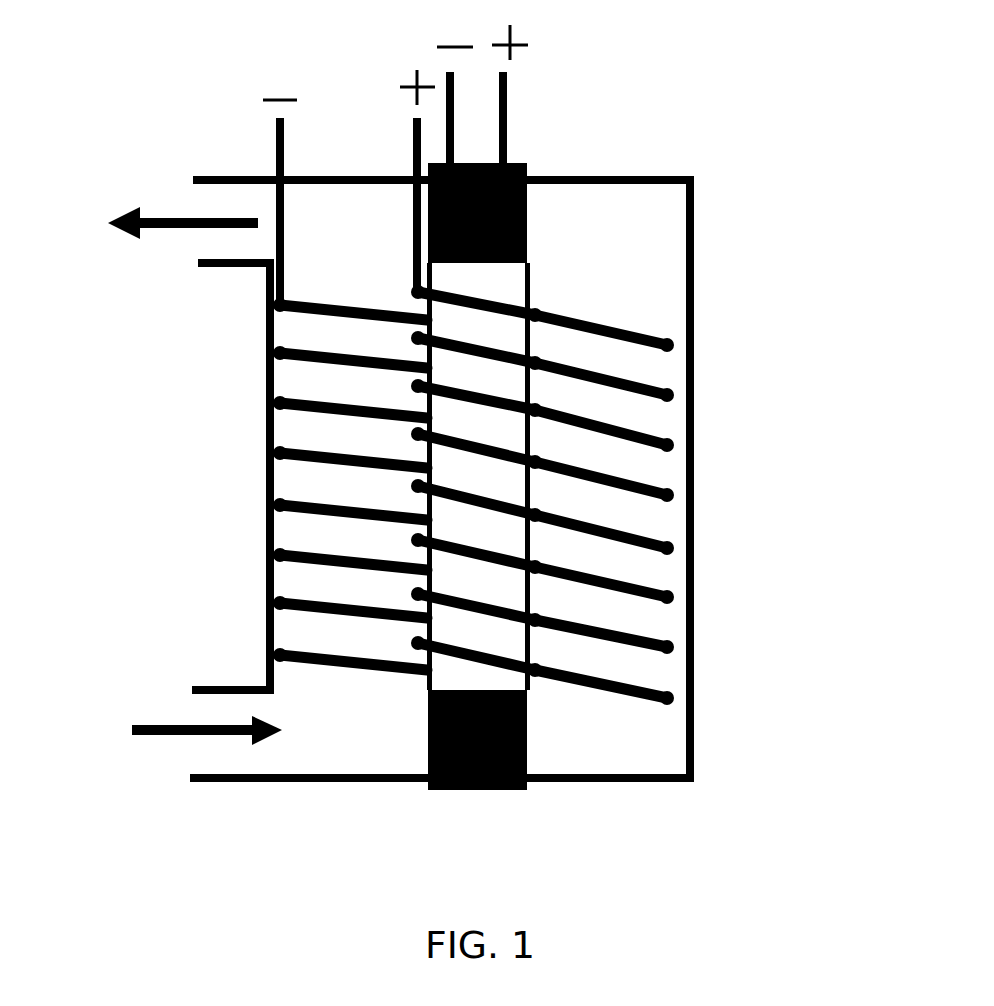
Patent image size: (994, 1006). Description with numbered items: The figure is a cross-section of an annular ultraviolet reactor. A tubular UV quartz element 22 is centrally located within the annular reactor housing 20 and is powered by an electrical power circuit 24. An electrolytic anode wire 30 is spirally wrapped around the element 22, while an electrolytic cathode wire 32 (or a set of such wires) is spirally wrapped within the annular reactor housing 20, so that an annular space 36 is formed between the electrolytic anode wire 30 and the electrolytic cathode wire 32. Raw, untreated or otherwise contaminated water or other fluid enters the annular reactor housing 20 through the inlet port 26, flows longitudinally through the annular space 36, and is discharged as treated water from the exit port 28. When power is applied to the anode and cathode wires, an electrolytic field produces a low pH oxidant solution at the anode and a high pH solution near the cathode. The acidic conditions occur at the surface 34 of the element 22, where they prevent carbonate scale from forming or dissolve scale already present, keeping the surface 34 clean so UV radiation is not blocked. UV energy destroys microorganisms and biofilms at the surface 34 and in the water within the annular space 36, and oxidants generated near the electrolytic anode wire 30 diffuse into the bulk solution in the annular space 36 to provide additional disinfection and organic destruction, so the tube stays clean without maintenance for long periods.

The annular reactor housing 20 is at (690, 363).
The tubular UV quartz element 22 is at (530, 290).
The electrical power circuit 24 is at (527, 218).
The inlet port 26 is at (182, 752).
The exit port 28 is at (195, 202).
The electrolytic anode wire 30 is at (510, 610).
The electrolytic cathode wire 32 is at (660, 487).
The surface 34 is at (517, 495).
The annular space 36 is at (613, 418).